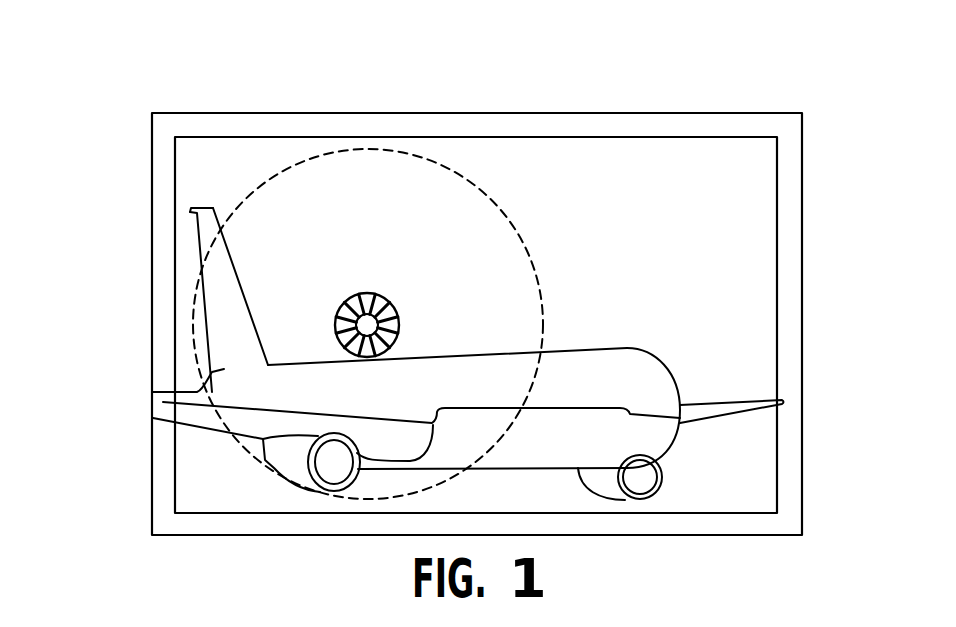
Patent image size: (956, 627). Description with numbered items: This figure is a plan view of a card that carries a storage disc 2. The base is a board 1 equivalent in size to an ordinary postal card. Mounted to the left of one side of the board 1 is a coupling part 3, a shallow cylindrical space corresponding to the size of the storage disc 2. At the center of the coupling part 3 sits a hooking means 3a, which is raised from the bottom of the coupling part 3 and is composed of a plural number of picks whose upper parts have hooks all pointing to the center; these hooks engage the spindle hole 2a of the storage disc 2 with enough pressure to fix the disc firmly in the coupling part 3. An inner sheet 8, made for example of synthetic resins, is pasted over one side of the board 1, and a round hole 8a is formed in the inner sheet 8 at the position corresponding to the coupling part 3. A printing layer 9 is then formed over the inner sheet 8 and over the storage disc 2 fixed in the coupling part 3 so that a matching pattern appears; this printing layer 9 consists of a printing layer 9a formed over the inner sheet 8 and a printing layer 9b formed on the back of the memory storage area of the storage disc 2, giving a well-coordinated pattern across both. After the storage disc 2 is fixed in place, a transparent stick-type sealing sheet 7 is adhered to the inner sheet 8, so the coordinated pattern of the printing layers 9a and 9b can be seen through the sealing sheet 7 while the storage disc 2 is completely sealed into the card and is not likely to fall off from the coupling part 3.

The board 1 is at (133, 318).
The storage disc 2 is at (455, 213).
The spindle hole 2a is at (343, 297).
The coupling part 3 is at (419, 262).
The hooking means 3a is at (366, 293).
The transparent sealing sheet 7 is at (211, 137).
The inner sheet 8 is at (451, 122).
The round hole 8a is at (505, 230).
The printing layer 9 is at (78, 163).
The printing layer 9a is at (186, 230).
The printing layer 9b is at (263, 210).